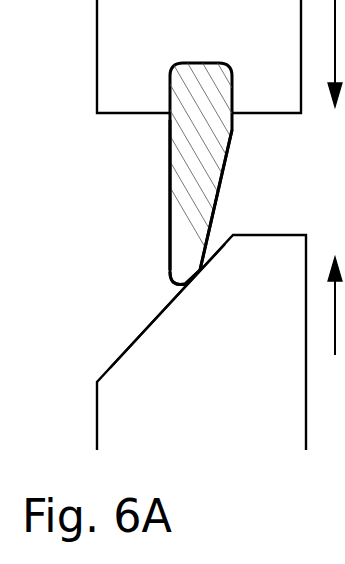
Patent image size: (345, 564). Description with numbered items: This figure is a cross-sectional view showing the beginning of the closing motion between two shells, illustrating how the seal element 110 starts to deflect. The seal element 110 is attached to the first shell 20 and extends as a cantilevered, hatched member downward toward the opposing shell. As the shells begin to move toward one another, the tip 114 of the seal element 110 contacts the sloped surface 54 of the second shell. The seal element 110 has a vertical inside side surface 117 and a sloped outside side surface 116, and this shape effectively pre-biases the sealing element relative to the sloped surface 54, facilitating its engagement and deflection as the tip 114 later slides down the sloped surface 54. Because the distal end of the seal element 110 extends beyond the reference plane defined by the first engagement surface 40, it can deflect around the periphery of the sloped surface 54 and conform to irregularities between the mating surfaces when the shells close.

The first shell 20 is at (180, 25).
The first engagement surface 40 is at (187, 392).
The sloped surface 54 is at (170, 323).
The seal element 110 is at (222, 166).
The tip 114 is at (170, 272).
The sloped outside side surface 116 is at (206, 232).
The vertical inside side surface 117 is at (170, 220).